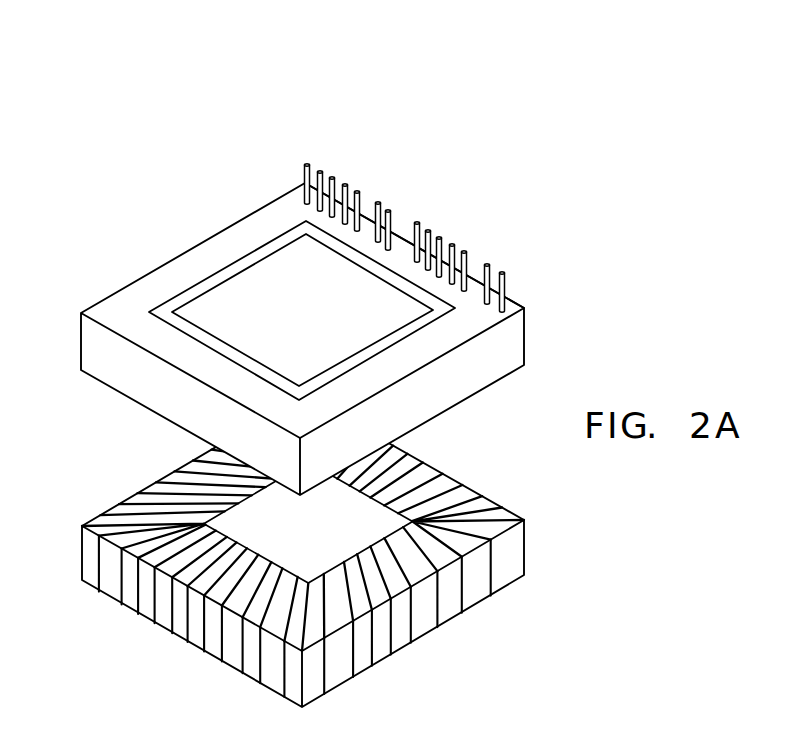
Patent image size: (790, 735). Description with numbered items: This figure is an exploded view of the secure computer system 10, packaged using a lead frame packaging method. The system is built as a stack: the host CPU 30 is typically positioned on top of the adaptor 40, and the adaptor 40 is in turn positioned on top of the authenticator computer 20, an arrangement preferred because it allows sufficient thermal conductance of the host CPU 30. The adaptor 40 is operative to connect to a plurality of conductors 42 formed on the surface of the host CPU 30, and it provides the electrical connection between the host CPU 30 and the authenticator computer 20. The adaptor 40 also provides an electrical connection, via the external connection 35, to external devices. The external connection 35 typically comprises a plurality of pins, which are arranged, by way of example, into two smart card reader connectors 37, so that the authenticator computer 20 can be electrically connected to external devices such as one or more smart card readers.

The secure computer system 10 is at (323, 363).
The authenticator computer 20 is at (142, 492).
The host CPU 30 is at (260, 280).
The external connection 35 is at (309, 164).
The smart card reader connectors 37 is at (390, 170).
The adaptor 40 is at (97, 345).
The conductors 42 is at (413, 613).